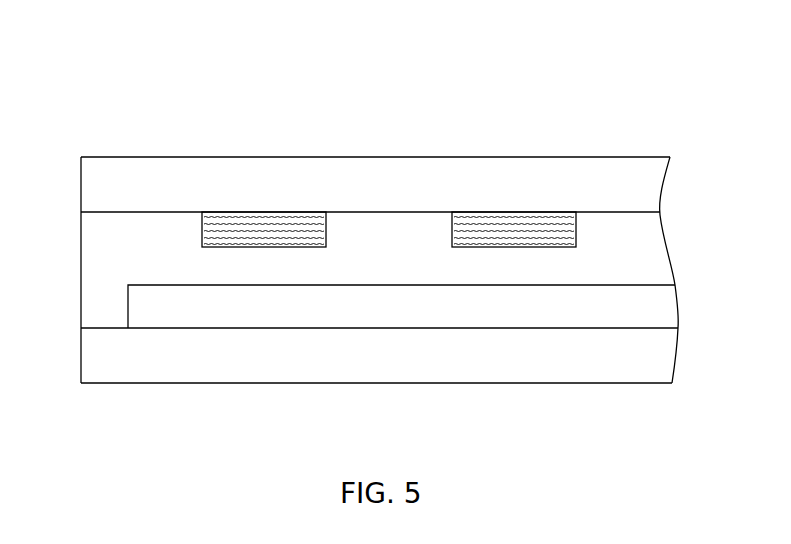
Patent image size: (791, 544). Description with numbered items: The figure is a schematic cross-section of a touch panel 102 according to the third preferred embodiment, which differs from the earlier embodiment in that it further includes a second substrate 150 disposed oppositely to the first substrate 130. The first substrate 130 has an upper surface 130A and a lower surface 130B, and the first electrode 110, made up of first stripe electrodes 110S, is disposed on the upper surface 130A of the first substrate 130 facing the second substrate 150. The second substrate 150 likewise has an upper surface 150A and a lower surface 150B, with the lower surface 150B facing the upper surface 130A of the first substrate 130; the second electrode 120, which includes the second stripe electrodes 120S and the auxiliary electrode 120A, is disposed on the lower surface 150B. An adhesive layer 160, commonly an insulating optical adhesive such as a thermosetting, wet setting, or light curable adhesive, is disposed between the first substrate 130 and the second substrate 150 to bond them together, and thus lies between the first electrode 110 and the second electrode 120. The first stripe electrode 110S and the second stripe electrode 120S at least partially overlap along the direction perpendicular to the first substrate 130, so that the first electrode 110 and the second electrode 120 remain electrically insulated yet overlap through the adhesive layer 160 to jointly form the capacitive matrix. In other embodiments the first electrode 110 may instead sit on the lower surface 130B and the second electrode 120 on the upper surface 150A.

The touch panel 102 is at (659, 75).
The second substrate 150 is at (648, 182).
The upper surface 150A is at (643, 157).
The lower surface 150B is at (633, 213).
The second electrode 120 is at (389, 180).
The auxiliary electrode 120A is at (262, 222).
The second stripe electrode 120S is at (517, 220).
The adhesive layer 160 is at (107, 263).
The first electrode 110 is at (403, 354).
The first stripe electrode 110S is at (402, 312).
The first substrate 130 is at (665, 348).
The upper surface 130A is at (640, 327).
The lower surface 130B is at (635, 383).